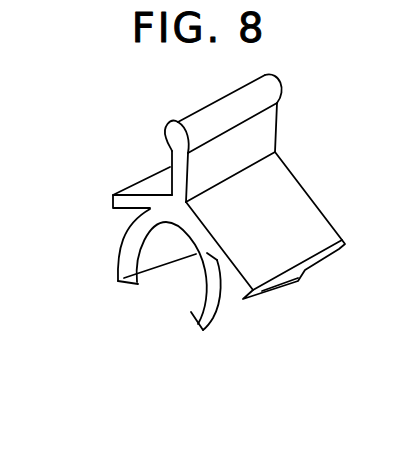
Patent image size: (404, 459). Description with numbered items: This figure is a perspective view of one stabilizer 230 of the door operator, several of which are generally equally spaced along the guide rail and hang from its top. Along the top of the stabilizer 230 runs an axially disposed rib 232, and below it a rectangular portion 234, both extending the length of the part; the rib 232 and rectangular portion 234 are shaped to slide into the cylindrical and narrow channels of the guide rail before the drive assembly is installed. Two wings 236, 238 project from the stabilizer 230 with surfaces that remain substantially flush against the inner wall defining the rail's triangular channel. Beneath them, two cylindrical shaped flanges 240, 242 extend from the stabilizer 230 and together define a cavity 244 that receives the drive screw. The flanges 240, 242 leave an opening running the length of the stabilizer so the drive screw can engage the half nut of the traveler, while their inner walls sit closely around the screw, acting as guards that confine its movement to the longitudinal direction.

The stabilizer 230 is at (297, 168).
The rib 232 is at (213, 113).
The rectangular portion 234 is at (261, 135).
The wing 236 is at (318, 223).
The wing 238 is at (148, 188).
The cylindrical shaped flange 240 is at (205, 317).
The cylindrical shaped flange 242 is at (129, 258).
The cavity 244 is at (187, 290).